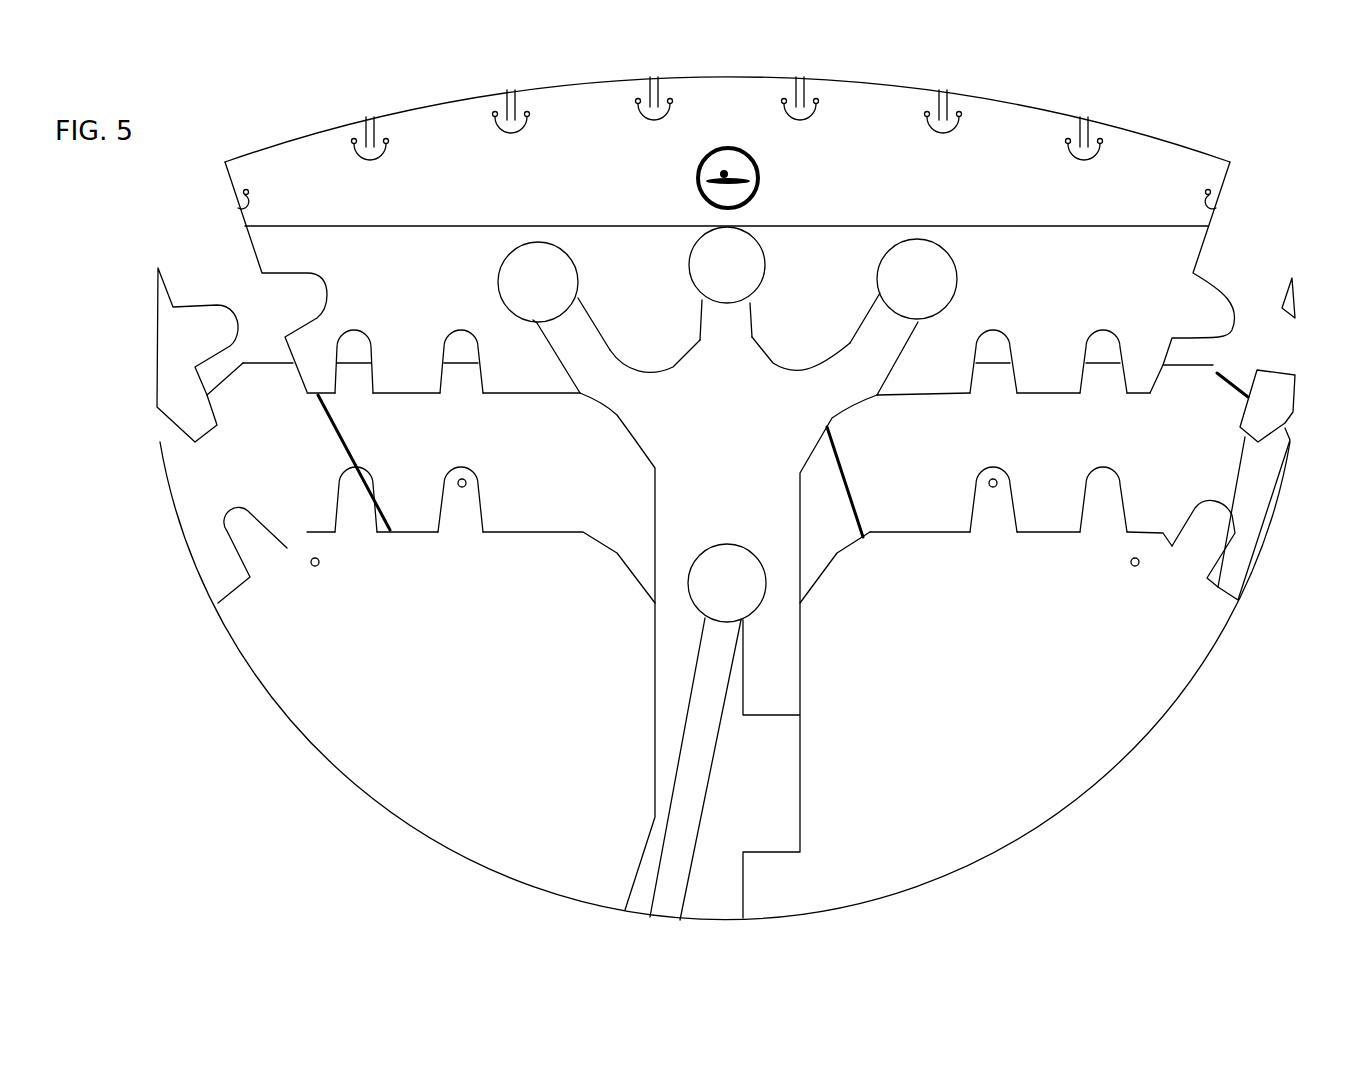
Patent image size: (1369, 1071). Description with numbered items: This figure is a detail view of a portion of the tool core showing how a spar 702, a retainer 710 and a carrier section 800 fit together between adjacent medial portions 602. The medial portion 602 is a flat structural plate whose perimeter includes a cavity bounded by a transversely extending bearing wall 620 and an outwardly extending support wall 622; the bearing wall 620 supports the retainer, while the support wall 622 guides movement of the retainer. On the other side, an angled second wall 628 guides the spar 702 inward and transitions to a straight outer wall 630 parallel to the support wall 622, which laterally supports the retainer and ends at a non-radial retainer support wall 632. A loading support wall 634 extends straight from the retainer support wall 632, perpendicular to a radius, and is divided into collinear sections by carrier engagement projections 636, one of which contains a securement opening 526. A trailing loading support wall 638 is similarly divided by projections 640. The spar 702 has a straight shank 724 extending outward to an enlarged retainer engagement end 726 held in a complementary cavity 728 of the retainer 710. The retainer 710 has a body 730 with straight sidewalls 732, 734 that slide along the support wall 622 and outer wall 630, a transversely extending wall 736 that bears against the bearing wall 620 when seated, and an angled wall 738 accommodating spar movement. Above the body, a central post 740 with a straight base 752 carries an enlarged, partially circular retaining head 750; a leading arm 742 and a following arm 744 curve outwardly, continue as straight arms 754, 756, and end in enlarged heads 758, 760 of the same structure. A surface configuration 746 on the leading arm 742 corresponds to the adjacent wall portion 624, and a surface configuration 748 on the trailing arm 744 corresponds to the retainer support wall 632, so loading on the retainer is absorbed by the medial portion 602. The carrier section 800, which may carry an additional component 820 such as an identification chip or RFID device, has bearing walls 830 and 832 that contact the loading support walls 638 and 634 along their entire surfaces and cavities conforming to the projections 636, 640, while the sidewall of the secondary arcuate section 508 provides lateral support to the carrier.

The carrier section 800 is at (877, 78).
The additional component 820 is at (737, 160).
The retainer 710 is at (689, 640).
The enlarged head 760 is at (547, 262).
The enlarged retaining head 750 is at (740, 263).
The enlarged head 758 is at (927, 277).
The following arm 744 is at (576, 313).
The straight arm 756 is at (587, 356).
The straight base 752 is at (710, 348).
The central post 740 is at (739, 357).
The leading arm 742 is at (888, 343).
The straight arm 754 is at (873, 363).
The surface configuration 748 is at (630, 440).
The surface configuration 746 is at (823, 448).
The body 730 is at (770, 500).
The sidewall 732 is at (800, 533).
The bearing wall 832 is at (310, 395).
The bearing wall 830 is at (960, 395).
The carrier engagement projection 636 is at (325, 500).
The carrier engagement projection 640 is at (1079, 501).
The securement opening 526 is at (313, 567).
The loading support wall 638 is at (228, 600).
The secondary arcuate section 508 is at (173, 447).
The retainer support wall 632 is at (598, 532).
The loading support wall 634 is at (527, 520).
The sidewall 734 is at (653, 540).
The wall portion 624 is at (845, 535).
The retainer engagement end 726 is at (735, 577).
The cavity 728 is at (743, 602).
The angled wall 738 is at (672, 670).
The outer wall 630 is at (660, 770).
The second wall 628 is at (632, 888).
The shank 724 is at (663, 907).
The spar 702 is at (668, 877).
The transversely extending wall 736 is at (763, 715).
The support wall 622 is at (798, 827).
The bearing wall 620 is at (765, 853).
The medial portion 602 is at (348, 712).